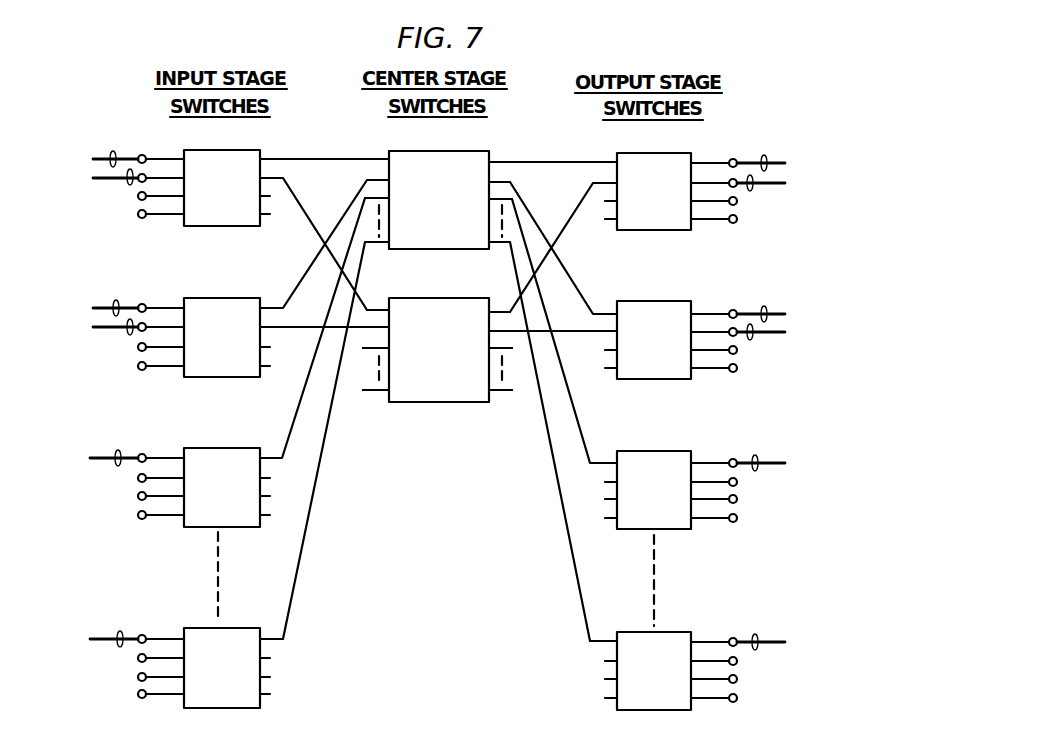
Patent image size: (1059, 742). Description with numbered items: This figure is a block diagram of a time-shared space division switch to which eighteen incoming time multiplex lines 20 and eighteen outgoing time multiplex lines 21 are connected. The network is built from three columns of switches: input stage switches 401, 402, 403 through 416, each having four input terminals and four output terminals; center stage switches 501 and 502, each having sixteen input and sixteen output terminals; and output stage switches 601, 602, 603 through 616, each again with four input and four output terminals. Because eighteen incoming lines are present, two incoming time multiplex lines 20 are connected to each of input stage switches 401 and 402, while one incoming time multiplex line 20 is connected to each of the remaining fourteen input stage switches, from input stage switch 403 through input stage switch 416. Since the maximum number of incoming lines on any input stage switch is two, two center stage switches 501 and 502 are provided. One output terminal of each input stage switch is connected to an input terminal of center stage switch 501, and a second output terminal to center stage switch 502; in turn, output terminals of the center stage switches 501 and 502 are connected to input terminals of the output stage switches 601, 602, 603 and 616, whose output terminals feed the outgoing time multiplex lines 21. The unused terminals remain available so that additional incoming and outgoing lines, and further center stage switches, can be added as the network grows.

The incoming time multiplex line 20 is at (130, 168).
The outgoing time multiplex line 21 is at (764, 155).
The input stage switch 401 is at (211, 151).
The input stage switch 402 is at (212, 297).
The input stage switch 403 is at (213, 448).
The input stage switch 416 is at (211, 628).
The center stage switch 501 is at (432, 150).
The center stage switch 502 is at (440, 297).
The output stage switch 601 is at (663, 154).
The output stage switch 602 is at (663, 301).
The output stage switch 603 is at (663, 451).
The output stage switch 616 is at (663, 631).